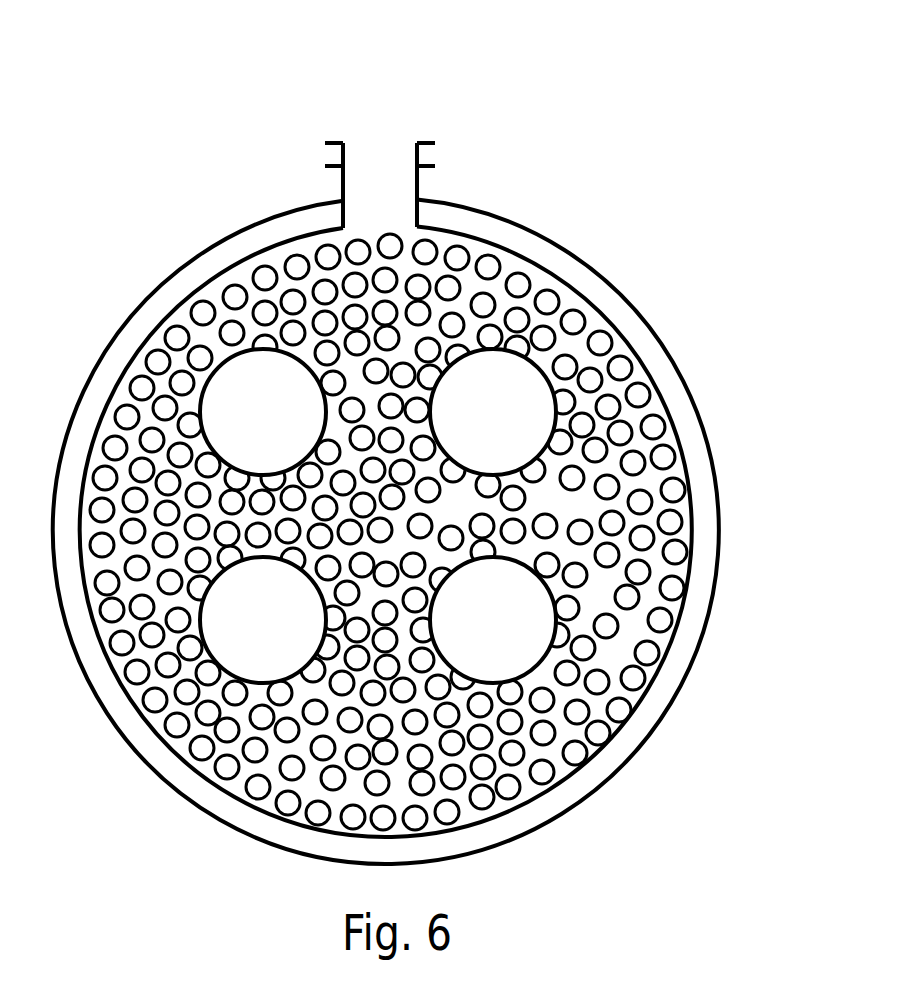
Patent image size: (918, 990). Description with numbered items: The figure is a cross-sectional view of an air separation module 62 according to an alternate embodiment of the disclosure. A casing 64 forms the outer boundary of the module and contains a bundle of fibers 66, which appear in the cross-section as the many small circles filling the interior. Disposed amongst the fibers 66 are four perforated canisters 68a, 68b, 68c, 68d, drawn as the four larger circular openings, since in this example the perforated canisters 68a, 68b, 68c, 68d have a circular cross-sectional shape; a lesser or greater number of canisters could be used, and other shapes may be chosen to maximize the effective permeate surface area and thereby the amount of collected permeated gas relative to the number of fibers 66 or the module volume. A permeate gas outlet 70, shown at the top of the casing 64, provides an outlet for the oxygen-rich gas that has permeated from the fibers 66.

The air separation module 62 is at (206, 140).
The casing 64 is at (560, 243).
The fibers 66 is at (630, 486).
The perforated canister 68a is at (560, 378).
The perforated canister 68b is at (544, 678).
The perforated canister 68c is at (254, 694).
The perforated canister 68d is at (220, 352).
The permeate gas outlet 70 is at (418, 176).